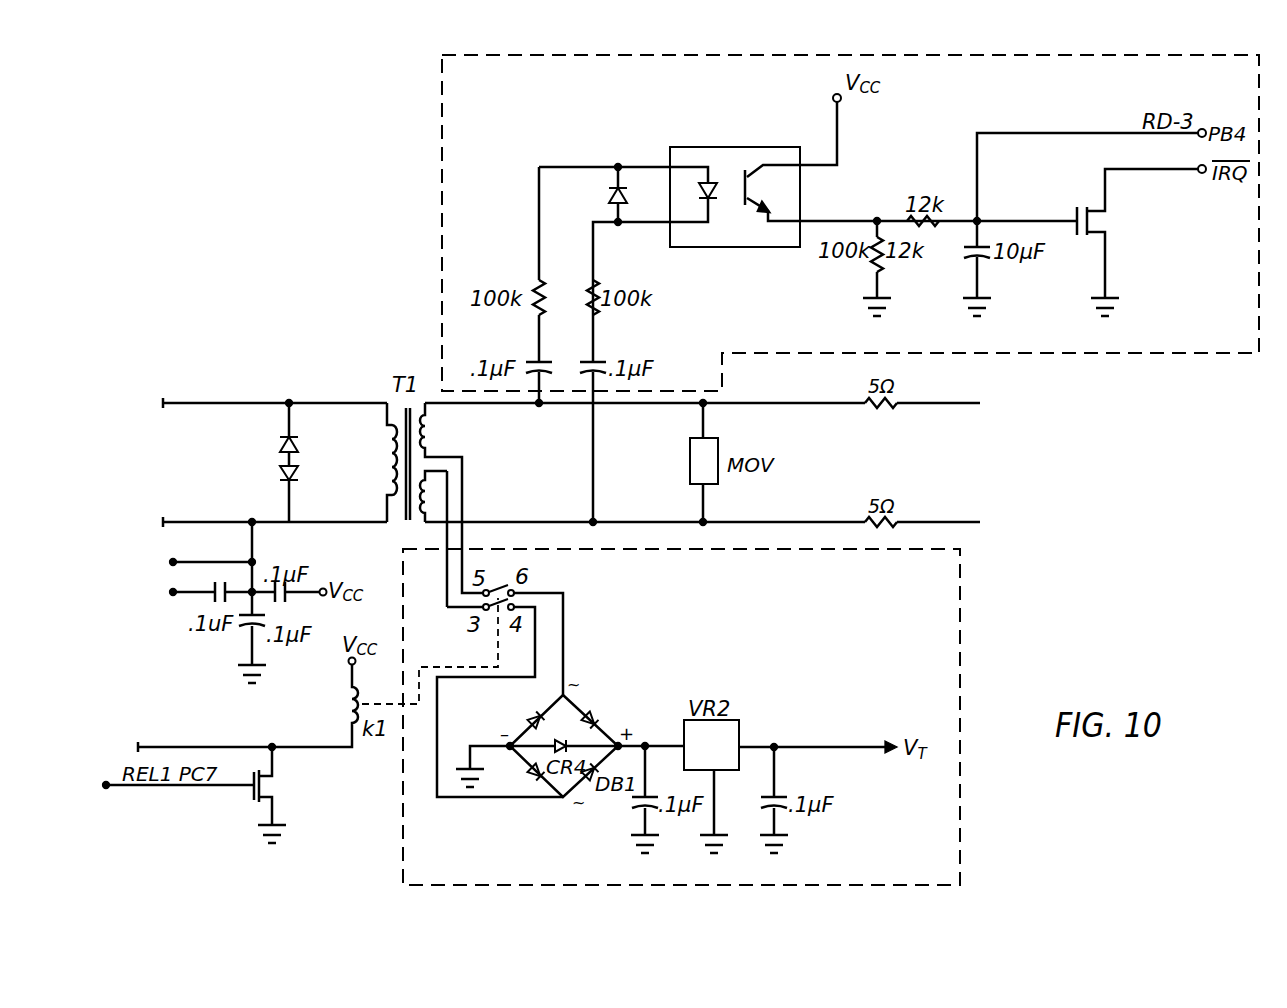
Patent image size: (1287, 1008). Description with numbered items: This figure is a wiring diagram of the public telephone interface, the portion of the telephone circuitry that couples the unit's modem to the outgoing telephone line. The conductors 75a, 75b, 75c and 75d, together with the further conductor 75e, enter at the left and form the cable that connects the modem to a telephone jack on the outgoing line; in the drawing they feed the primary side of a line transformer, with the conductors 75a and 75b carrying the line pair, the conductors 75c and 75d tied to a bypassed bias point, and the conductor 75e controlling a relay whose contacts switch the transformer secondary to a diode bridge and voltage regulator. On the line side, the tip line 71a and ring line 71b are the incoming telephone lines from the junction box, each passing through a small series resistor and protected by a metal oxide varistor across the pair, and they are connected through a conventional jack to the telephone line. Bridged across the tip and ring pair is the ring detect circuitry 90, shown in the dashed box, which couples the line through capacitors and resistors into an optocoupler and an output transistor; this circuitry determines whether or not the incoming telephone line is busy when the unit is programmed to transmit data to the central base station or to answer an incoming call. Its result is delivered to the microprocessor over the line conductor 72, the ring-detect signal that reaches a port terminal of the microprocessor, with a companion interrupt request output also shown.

The ring detect circuitry 90 is at (441, 145).
The line conductor 72 is at (1045, 131).
The conductor 75a is at (232, 405).
The conductor 75b is at (232, 521).
The conductor 75c is at (183, 595).
The conductor 75d is at (186, 561).
The relay control lead 75e is at (224, 746).
The tip line 71a is at (940, 404).
The ring line 71b is at (924, 521).